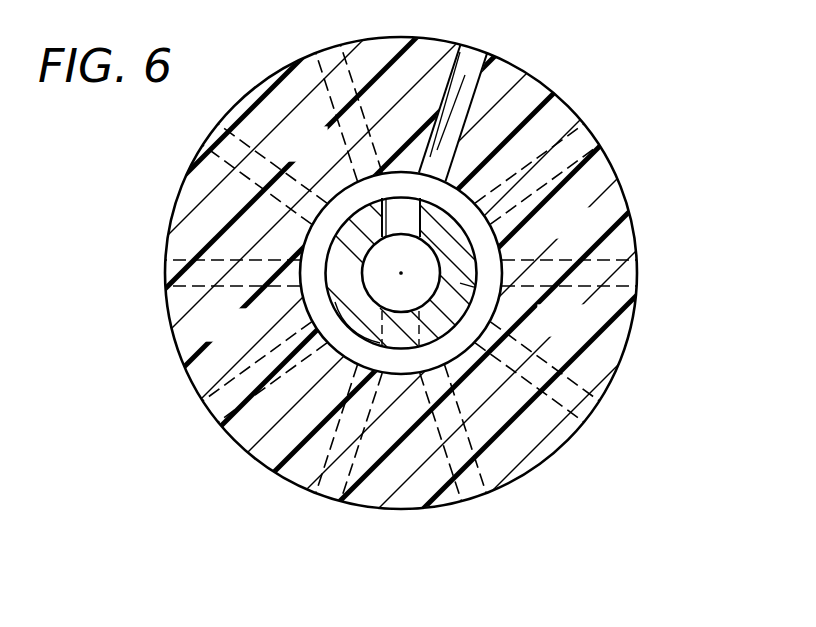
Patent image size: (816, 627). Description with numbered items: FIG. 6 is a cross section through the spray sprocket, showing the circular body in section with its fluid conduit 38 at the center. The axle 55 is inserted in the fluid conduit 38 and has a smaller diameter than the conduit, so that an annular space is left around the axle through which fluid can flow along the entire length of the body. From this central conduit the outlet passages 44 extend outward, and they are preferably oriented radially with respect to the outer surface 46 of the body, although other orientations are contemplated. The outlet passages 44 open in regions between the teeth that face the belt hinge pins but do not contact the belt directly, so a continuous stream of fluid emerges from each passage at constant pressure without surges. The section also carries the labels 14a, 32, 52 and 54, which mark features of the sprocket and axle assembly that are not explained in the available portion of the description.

The roller 14a is at (633, 330).
The roller body 32 is at (547, 466).
The fluid conduit 38 is at (492, 263).
The outlet passages 44 is at (460, 105).
The outer surface 46 is at (480, 50).
The shaft 52 is at (373, 262).
The key slot 54 is at (393, 218).
The axle 55 is at (517, 325).